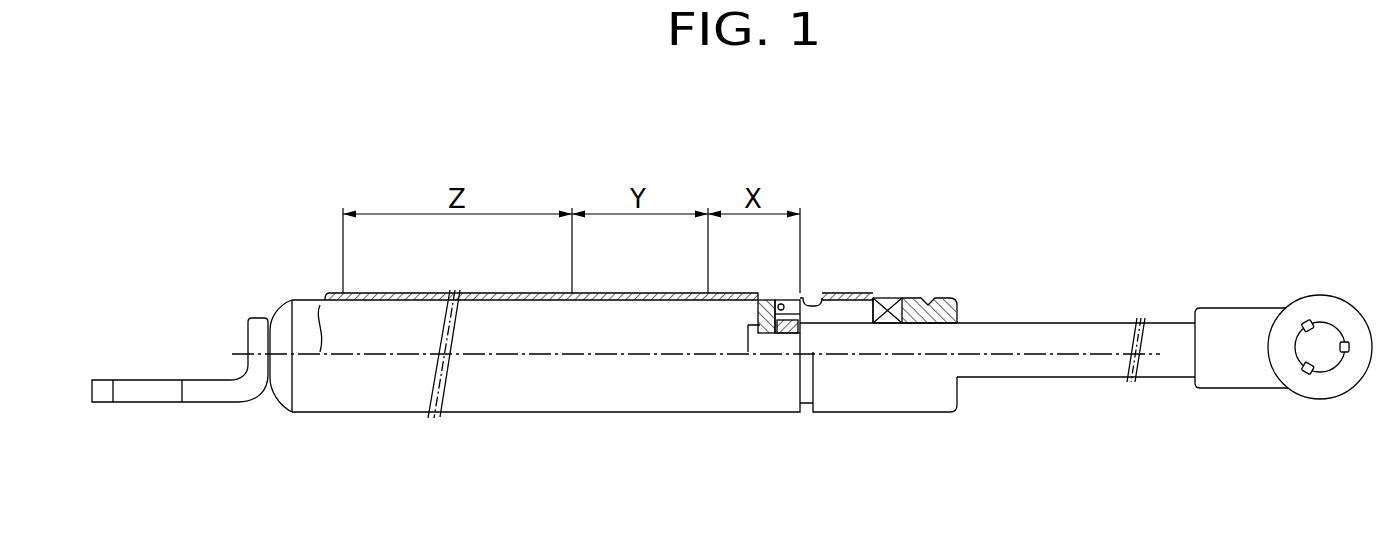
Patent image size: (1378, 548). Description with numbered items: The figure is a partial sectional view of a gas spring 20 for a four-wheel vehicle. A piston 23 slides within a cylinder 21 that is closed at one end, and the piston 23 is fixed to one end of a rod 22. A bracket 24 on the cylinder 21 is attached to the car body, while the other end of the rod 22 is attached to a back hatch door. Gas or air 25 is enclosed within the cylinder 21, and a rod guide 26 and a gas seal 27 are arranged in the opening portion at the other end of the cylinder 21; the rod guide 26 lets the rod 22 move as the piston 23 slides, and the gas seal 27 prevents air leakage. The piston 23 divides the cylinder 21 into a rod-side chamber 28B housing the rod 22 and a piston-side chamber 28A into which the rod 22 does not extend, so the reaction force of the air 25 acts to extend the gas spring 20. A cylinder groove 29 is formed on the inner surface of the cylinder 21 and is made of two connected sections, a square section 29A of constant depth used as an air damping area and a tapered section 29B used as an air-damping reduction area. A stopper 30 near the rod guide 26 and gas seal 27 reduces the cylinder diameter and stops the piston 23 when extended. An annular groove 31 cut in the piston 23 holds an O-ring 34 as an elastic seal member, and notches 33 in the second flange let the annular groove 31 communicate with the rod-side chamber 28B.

The gas spring 20 is at (962, 225).
The cylinder 21 is at (565, 412).
The rod 22 is at (1073, 330).
The piston 23 is at (770, 350).
The bracket 24 is at (202, 395).
The gas or air 25 is at (483, 327).
The rod guide 26 is at (950, 315).
The gas seal 27 is at (890, 303).
The piston-side chamber 28A is at (547, 325).
The rod-side chamber 28B is at (848, 305).
The cylinder groove 29 is at (511, 310).
The square groove section 29A is at (468, 302).
The tapered groove section 29B is at (645, 301).
The stopper 30 is at (816, 300).
The annular groove 31 is at (778, 333).
The notch 33 is at (800, 308).
The O-ring 34 is at (773, 300).